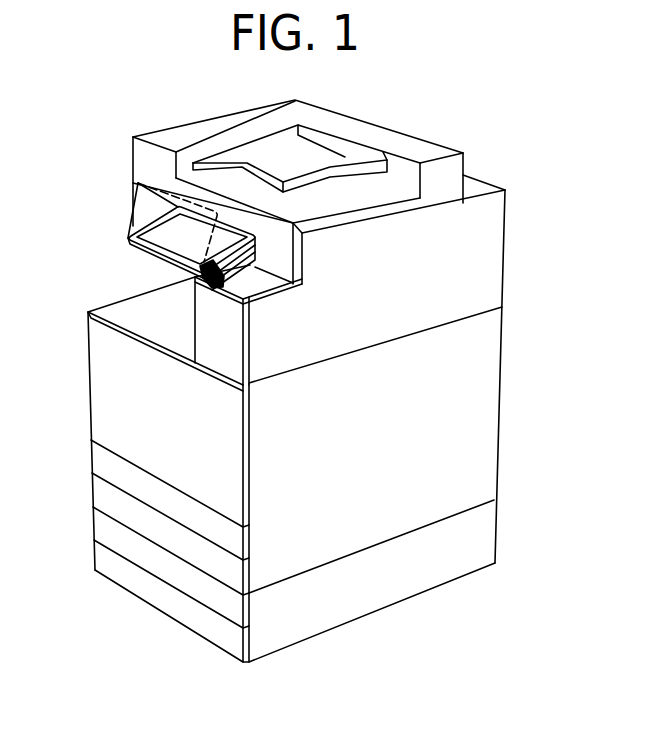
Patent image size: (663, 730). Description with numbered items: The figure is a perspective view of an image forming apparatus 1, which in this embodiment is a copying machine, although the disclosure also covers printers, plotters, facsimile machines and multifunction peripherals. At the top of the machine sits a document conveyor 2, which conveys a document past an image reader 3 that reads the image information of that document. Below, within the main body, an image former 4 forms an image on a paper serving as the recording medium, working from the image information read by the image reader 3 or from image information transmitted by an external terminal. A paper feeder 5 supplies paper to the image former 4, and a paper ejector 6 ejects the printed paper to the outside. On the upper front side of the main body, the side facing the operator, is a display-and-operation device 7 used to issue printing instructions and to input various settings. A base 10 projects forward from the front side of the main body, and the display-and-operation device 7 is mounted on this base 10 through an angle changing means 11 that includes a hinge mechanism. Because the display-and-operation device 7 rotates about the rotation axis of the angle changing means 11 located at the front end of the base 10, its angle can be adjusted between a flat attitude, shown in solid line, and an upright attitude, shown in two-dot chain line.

The image forming apparatus 1 is at (91, 127).
The document conveyor 2 is at (389, 136).
The image reader 3 is at (430, 229).
The image former 4 is at (163, 410).
The paper feeder 5 is at (161, 597).
The paper ejector 6 is at (163, 317).
The display-and-operation device 7 is at (173, 228).
The base 10 is at (258, 258).
The angle changing means 11 is at (246, 333).